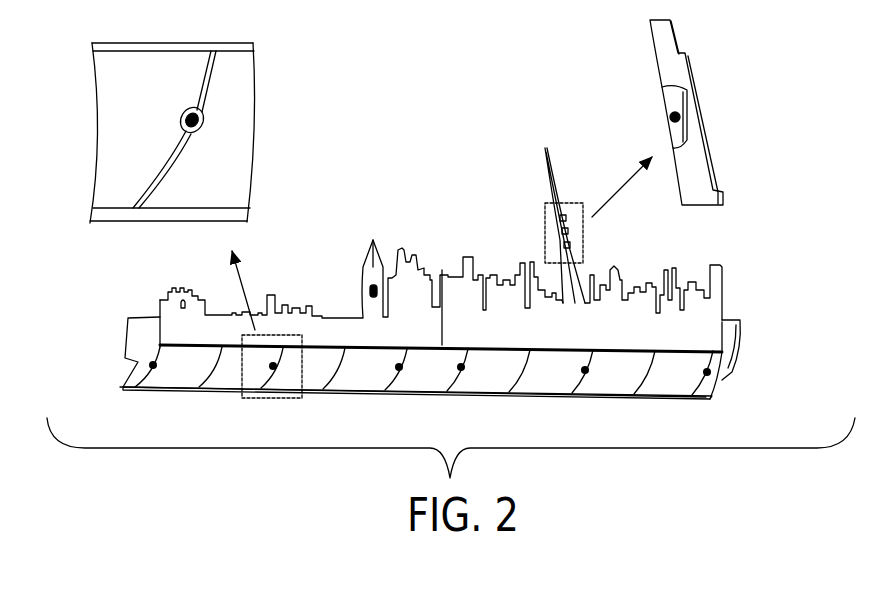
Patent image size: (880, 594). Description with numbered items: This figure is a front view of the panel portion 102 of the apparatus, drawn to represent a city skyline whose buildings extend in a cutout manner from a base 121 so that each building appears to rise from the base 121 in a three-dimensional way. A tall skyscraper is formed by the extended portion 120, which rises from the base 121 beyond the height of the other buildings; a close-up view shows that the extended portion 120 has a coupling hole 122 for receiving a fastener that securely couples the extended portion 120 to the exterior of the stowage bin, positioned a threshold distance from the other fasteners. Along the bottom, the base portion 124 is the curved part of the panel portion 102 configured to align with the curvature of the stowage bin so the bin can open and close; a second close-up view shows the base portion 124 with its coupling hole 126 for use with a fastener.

The panel portion 102 is at (386, 235).
The extended portion 120 is at (535, 200).
The base 121 is at (696, 389).
The coupling hole 122 is at (716, 115).
The base portion 124 is at (233, 396).
The coupling hole 126 is at (166, 120).